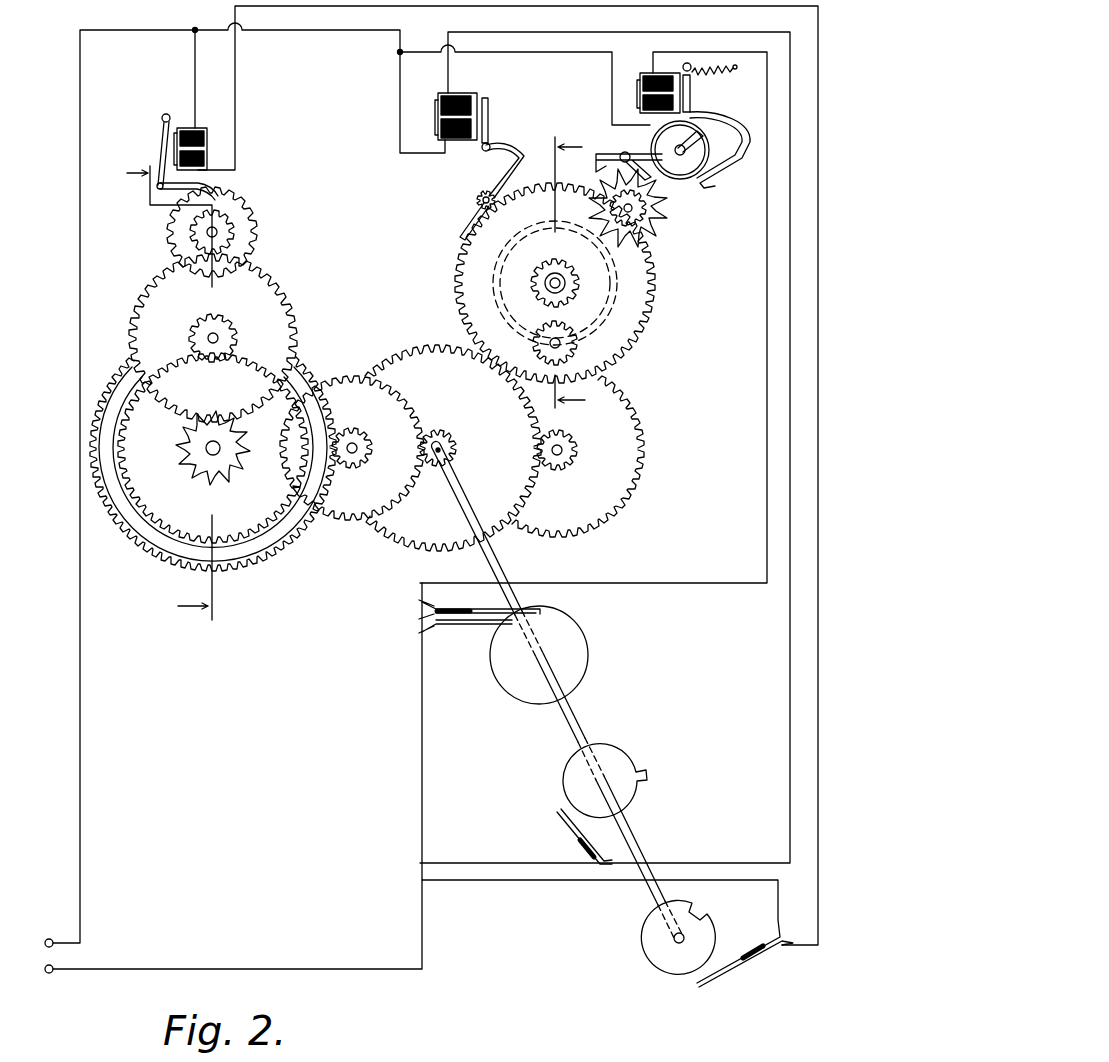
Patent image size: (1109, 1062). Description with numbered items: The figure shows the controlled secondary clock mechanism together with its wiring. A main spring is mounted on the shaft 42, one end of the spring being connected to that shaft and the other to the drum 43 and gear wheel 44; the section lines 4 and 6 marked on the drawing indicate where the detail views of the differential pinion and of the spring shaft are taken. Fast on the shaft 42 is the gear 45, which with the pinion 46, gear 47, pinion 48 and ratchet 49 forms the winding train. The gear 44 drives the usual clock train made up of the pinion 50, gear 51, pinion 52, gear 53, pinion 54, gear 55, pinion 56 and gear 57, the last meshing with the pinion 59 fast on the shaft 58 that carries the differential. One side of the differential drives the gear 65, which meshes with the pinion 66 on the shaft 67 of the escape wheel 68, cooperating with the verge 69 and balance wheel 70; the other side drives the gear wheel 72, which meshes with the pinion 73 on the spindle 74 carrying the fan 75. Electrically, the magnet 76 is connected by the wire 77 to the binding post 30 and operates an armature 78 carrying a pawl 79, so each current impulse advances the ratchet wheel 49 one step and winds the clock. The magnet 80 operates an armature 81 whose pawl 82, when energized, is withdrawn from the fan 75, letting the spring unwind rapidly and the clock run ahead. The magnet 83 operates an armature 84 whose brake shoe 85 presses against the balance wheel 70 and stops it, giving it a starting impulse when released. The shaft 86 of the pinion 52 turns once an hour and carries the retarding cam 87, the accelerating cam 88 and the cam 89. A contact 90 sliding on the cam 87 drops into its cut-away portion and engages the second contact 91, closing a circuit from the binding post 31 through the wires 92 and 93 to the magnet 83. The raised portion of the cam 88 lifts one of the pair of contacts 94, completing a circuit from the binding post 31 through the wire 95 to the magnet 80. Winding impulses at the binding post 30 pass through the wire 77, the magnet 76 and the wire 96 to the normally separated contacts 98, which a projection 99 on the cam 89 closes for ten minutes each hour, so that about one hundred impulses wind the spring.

The section line 4- 4 is at (559, 274).
The section line 6- 6 is at (176, 384).
The binding post 30 is at (51, 938).
The binding post 31 is at (53, 974).
The shaft 42 is at (219, 445).
The drum 43 is at (172, 535).
The gear wheel 44 is at (265, 560).
The gear 45 is at (151, 496).
The pinion 46 is at (218, 337).
The gear 47 is at (264, 278).
The pinion 48 is at (217, 232).
The ratchet wheel 49 is at (255, 213).
The pinion 50 is at (352, 440).
The gear 51 is at (362, 520).
The pinion 52 is at (438, 430).
The gear 53 is at (395, 536).
The pinion 54 is at (562, 457).
The gear 55 is at (634, 484).
The pinion 56 is at (575, 352).
The gear 57 is at (566, 344).
The shaft 58 is at (568, 291).
The pinion 59 is at (561, 284).
The gear 65 is at (492, 243).
The pinion 66 is at (645, 216).
The shaft 67 is at (634, 208).
The escape wheel 68 is at (660, 232).
The verge 69 is at (605, 155).
The balance wheel 70 is at (704, 146).
The gear wheel 72 is at (458, 278).
The pinion 73 is at (478, 199).
The spindle 74 is at (470, 210).
The fan 75 is at (500, 178).
The magnet 76 is at (181, 128).
The wire 77 is at (82, 92).
The armature 78 is at (162, 121).
The pawl 79 is at (218, 190).
The magnet 80 is at (466, 95).
The armature 81 is at (490, 110).
The pawl 82 is at (490, 145).
The magnet 83 is at (652, 78).
The armature 84 is at (692, 92).
The brake shoe 85 is at (707, 184).
The shaft 86 is at (503, 557).
The retarding cam 87 is at (586, 641).
The accelerating cam 88 is at (646, 762).
The cam 89 is at (652, 952).
The contact 90 is at (462, 606).
The second contact 91 is at (453, 625).
The wire 92 is at (362, 969).
The wire 93 is at (678, 583).
The pair of contacts 94 is at (560, 824).
The wire 95 is at (789, 662).
The wire 96 is at (419, 8).
The contacts 98 is at (738, 970).
The projection 99 is at (695, 892).